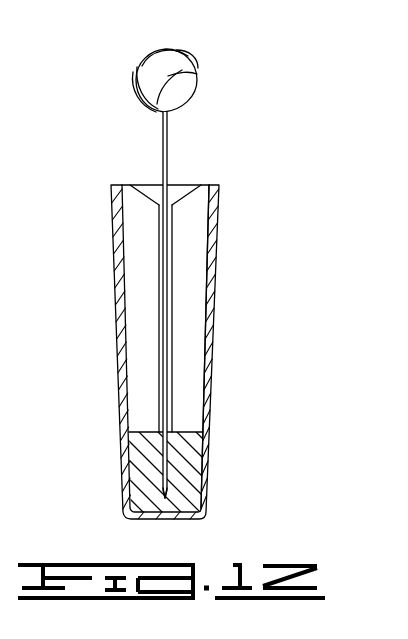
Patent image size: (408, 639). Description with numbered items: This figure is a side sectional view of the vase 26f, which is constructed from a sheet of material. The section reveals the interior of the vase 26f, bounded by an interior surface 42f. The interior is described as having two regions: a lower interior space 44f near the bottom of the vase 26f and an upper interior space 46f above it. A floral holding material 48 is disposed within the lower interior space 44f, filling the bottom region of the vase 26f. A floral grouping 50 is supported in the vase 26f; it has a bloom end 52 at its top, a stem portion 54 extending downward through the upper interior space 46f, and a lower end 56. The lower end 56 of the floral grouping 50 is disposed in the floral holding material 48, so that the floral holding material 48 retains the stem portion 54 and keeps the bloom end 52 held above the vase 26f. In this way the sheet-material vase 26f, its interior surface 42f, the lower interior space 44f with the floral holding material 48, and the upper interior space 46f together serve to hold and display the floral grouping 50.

The vase 26f is at (212, 343).
The interior surface 42f is at (203, 388).
The lower interior space 44f is at (192, 368).
The upper interior space 46f is at (130, 197).
The floral holding material 48 is at (192, 448).
The floral grouping 50 is at (157, 279).
The bloom end 52 is at (134, 73).
The stem portion 54 is at (214, 311).
The lower end 56 is at (166, 490).